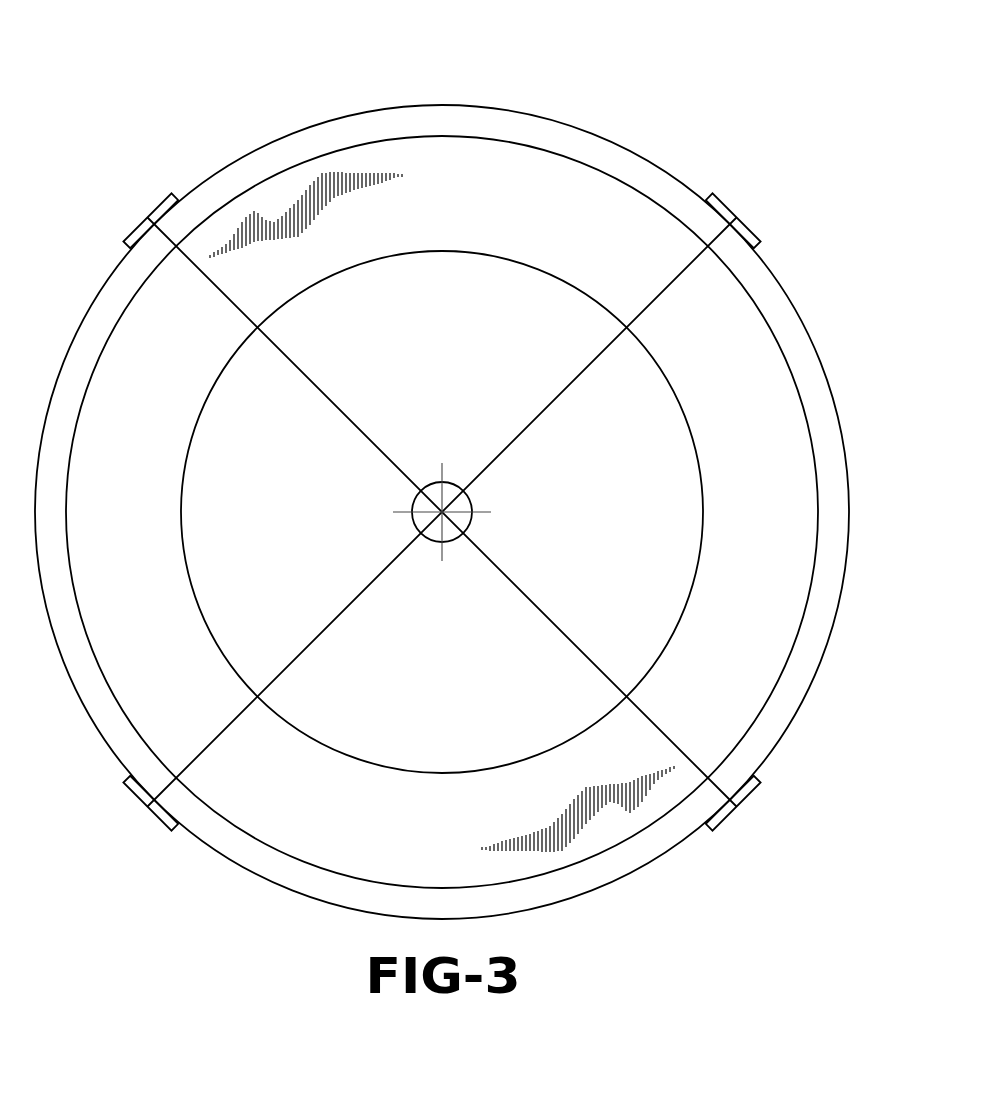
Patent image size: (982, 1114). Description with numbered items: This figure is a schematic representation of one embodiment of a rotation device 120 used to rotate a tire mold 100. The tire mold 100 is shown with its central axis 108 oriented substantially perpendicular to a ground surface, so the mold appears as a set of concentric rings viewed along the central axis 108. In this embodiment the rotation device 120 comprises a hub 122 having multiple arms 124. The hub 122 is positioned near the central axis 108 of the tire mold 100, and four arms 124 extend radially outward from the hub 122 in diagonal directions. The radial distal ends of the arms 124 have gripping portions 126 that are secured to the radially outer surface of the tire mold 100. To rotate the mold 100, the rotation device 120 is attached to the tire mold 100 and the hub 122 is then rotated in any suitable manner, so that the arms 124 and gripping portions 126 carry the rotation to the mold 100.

The tire mold 100 is at (668, 107).
The central axis 108 is at (462, 498).
The rotation device 120 is at (220, 108).
The hub 122 is at (413, 512).
The arms 124 is at (345, 415).
The gripping portions 126 is at (153, 222).